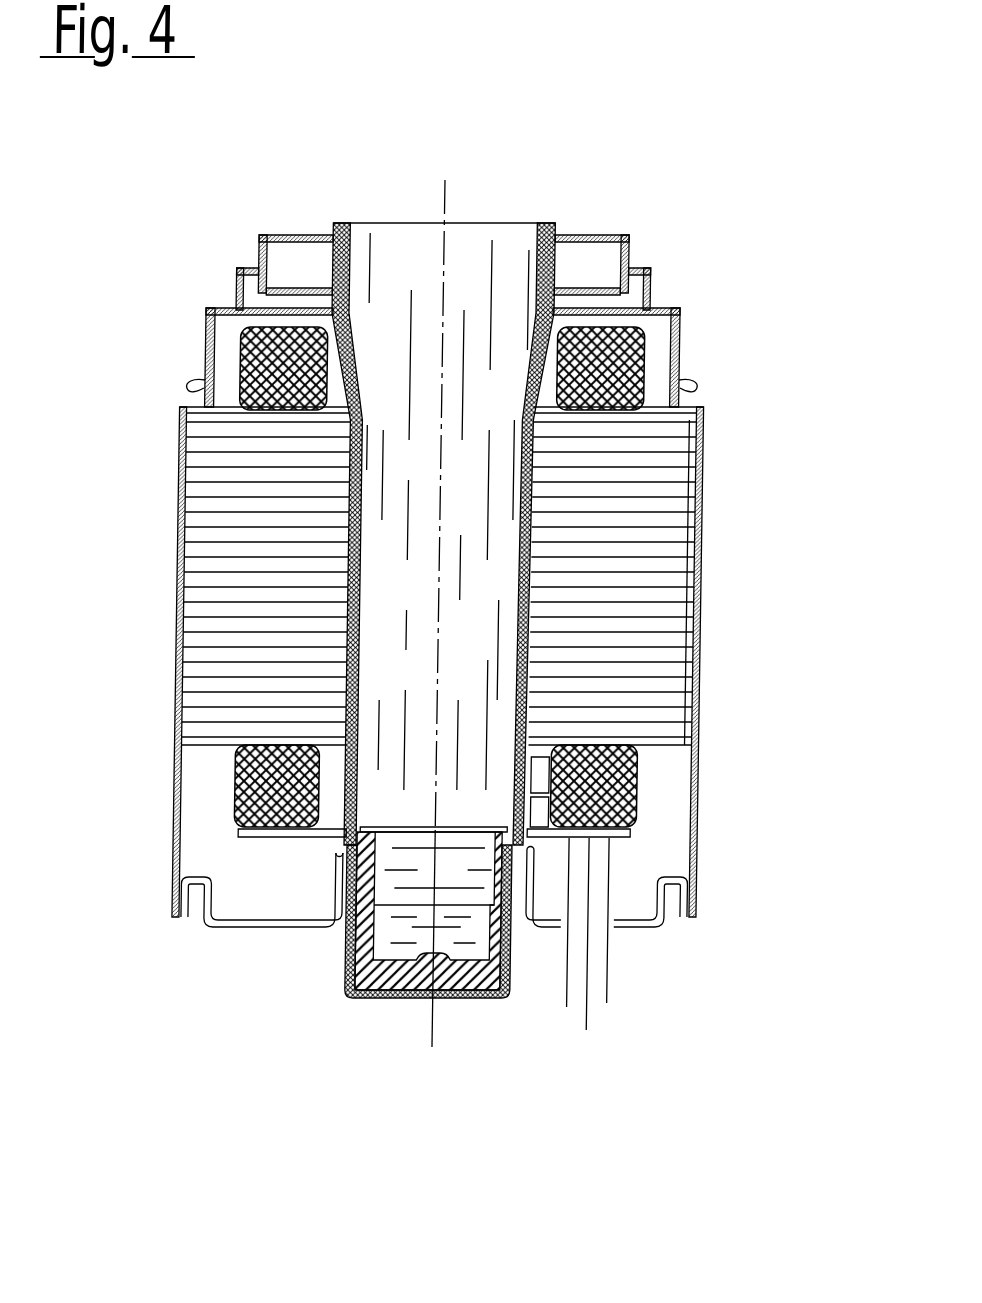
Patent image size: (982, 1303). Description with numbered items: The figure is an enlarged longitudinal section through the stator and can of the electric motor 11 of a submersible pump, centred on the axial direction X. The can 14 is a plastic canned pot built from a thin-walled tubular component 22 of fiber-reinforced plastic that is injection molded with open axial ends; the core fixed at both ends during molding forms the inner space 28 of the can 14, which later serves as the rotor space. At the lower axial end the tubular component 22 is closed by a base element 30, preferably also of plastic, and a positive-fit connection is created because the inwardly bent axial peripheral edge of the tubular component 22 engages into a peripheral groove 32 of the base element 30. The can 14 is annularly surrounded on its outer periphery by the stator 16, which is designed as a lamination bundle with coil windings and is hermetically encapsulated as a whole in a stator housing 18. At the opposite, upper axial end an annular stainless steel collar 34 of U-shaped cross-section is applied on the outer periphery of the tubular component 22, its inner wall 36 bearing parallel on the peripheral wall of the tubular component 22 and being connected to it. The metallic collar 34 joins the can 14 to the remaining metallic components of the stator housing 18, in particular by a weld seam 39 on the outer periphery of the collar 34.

The electric motor 11 is at (710, 715).
The can 14 is at (353, 597).
The stator 16 is at (652, 493).
The stator housing 18 is at (707, 531).
The tubular component 22 is at (639, 337).
The inner space 28 is at (493, 279).
The base element 30 is at (504, 1000).
The peripheral groove 32 is at (380, 1000).
The collar 34 is at (587, 238).
The inner wall 36 is at (636, 246).
The weld seam 39 is at (264, 241).
The axial direction X is at (443, 1036).